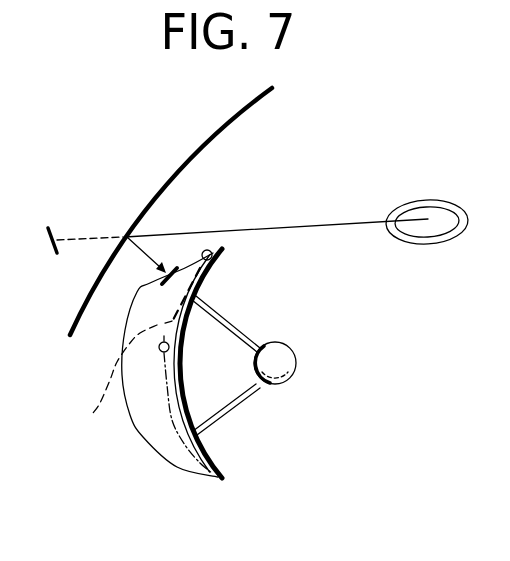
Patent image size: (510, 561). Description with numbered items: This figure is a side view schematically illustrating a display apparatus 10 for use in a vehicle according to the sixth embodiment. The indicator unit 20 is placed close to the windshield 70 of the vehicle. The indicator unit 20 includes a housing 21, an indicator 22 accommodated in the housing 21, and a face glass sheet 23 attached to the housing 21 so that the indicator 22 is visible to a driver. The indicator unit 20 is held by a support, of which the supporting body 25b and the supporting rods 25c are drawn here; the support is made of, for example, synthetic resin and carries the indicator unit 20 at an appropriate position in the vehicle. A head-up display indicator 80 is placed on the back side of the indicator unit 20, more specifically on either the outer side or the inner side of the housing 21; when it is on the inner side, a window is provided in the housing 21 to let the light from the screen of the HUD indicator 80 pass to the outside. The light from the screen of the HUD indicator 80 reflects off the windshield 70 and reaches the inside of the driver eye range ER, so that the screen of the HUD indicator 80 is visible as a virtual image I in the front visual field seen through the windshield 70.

The display apparatus 10 is at (311, 147).
The windshield 70 is at (224, 130).
The driver eye range ER is at (432, 212).
The virtual image I is at (48, 226).
The head-up display (HUD) indicator 80 is at (158, 287).
The indicator unit 20 is at (173, 464).
The housing 21 is at (140, 431).
The indicator 22 is at (111, 378).
The face glass sheet 23 is at (200, 458).
The supporting body 25b is at (275, 342).
The supporting rods 25c is at (212, 318).